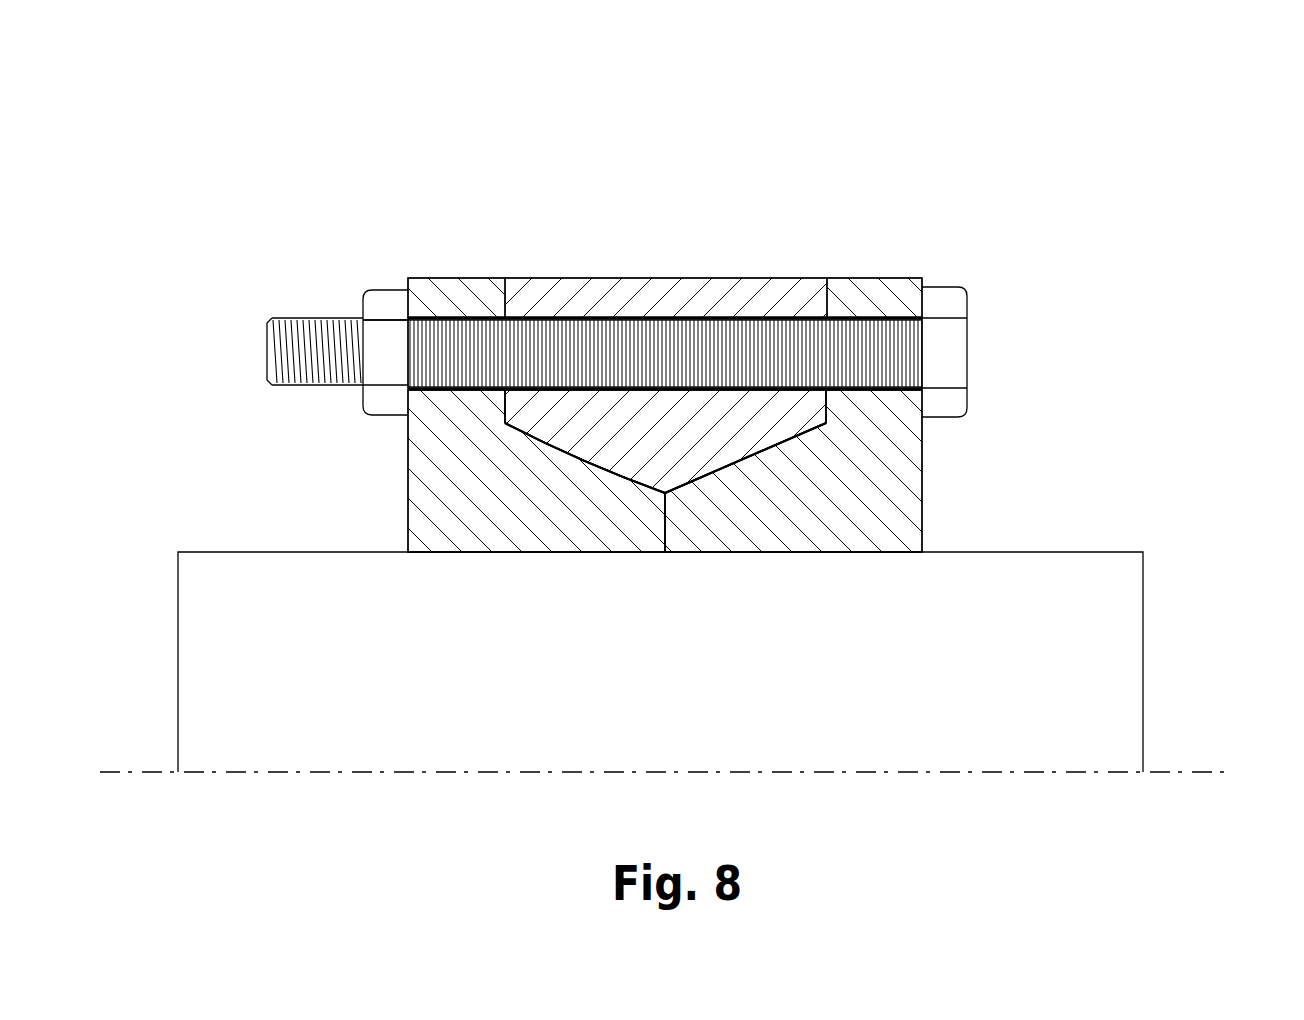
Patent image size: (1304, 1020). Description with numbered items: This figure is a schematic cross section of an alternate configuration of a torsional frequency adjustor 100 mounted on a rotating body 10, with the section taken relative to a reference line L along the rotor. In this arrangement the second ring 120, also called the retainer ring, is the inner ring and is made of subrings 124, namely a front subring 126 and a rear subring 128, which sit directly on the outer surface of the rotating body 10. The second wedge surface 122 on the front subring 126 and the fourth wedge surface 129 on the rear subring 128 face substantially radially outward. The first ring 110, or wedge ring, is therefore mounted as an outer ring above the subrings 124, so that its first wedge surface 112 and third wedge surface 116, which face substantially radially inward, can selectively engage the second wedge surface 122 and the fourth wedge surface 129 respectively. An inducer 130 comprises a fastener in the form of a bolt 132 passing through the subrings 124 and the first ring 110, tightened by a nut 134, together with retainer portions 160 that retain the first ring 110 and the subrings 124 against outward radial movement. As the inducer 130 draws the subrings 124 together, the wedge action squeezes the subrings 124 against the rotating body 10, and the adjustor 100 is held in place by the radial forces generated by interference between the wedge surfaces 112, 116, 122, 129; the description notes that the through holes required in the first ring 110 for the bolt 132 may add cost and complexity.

The rotating body 10 is at (668, 740).
The torsional frequency adjustor 100 is at (1106, 96).
The first ring 110 is at (665, 495).
The first wedge surface 112 is at (632, 468).
The third wedge surface 116 is at (707, 476).
The second ring 120 is at (716, 387).
The second wedge surface 122 is at (590, 465).
The subrings 124 is at (834, 264).
The front subring 126 is at (536, 495).
The rear subring 128 is at (793, 495).
The fourth wedge surface 129 is at (777, 442).
The inducer 130 is at (318, 232).
The bolt 132 is at (308, 327).
The nut 134 is at (388, 372).
The retainer portion 160 is at (450, 305).
The reference line L is at (1220, 768).